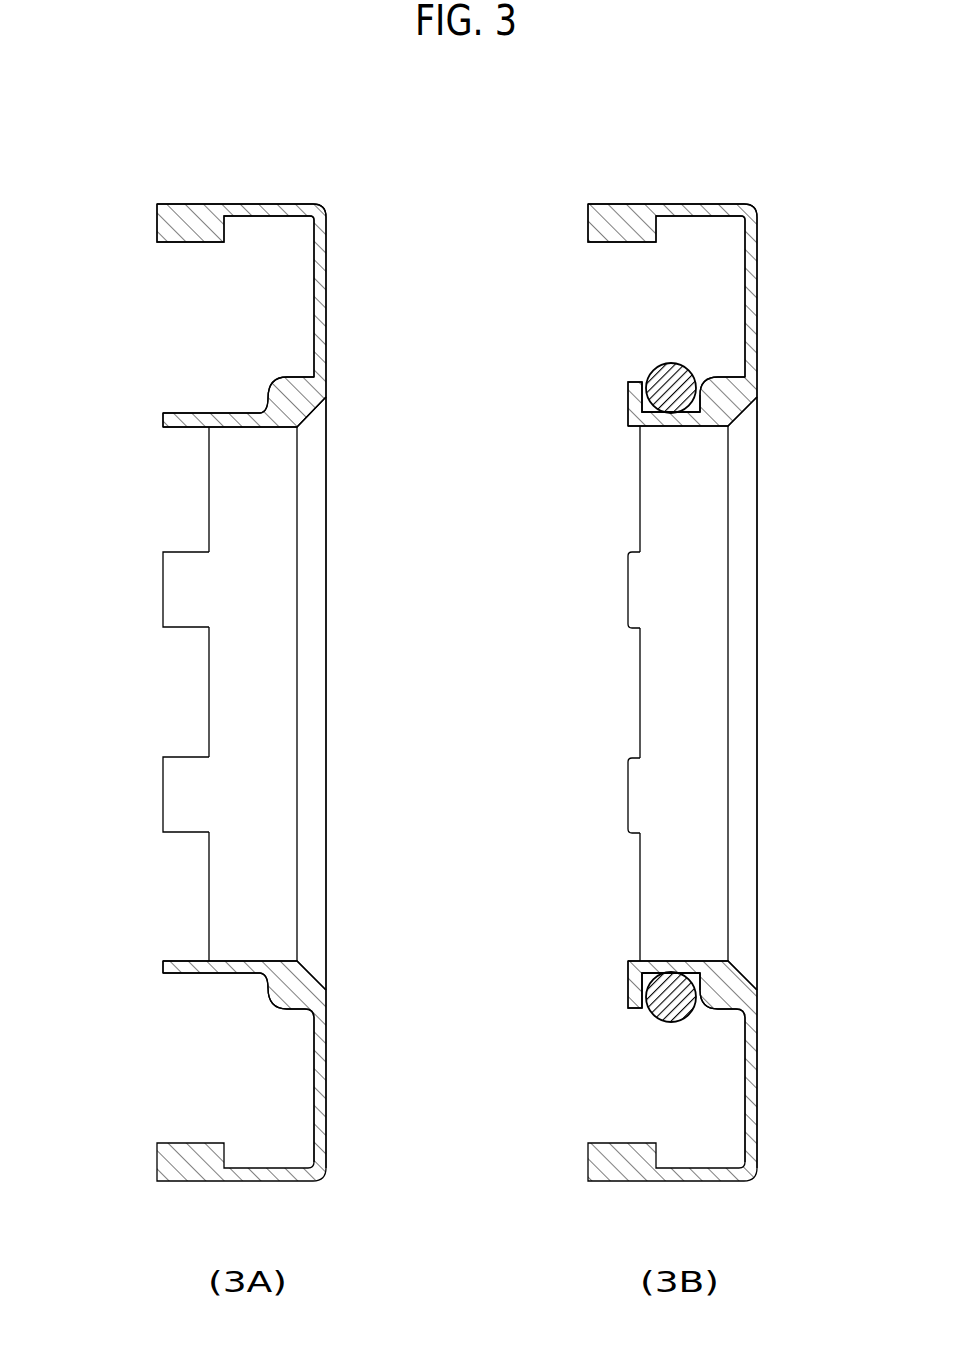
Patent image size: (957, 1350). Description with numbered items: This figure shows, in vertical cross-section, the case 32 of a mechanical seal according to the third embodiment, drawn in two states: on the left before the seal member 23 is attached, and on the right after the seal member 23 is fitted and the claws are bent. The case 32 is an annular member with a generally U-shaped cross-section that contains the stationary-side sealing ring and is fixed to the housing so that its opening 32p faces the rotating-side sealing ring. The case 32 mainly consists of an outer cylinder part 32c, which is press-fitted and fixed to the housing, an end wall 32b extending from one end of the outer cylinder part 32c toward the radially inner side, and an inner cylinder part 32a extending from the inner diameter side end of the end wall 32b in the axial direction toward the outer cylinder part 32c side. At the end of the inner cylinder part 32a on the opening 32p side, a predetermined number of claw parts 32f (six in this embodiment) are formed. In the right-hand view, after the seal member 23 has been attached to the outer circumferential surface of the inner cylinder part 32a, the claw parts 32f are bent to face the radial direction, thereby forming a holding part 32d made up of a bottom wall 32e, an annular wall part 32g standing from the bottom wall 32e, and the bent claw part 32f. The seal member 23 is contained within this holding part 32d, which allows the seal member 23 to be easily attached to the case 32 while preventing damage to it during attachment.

The case 32 is at (160, 202).
The inner cylinder part 32a is at (238, 428).
The end wall 32b is at (327, 295).
The outer cylinder part 32c is at (240, 204).
The holding part 32d is at (703, 390).
The bottom wall 32e is at (228, 412).
The claw parts 32f is at (163, 420).
The annular wall part 32g is at (320, 396).
The opening 32p is at (178, 300).
The seal member 23 is at (671, 363).